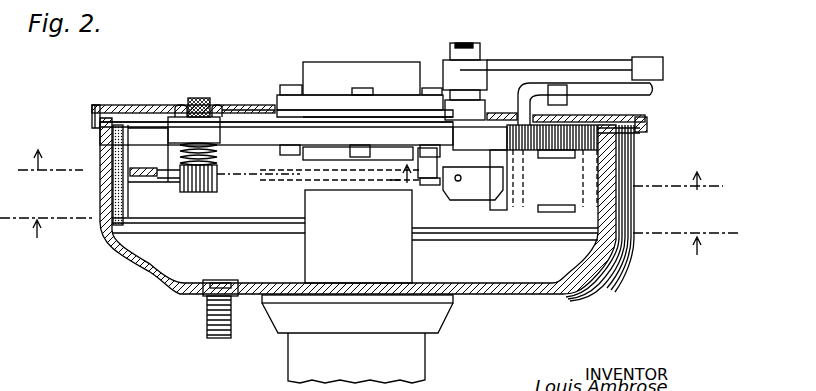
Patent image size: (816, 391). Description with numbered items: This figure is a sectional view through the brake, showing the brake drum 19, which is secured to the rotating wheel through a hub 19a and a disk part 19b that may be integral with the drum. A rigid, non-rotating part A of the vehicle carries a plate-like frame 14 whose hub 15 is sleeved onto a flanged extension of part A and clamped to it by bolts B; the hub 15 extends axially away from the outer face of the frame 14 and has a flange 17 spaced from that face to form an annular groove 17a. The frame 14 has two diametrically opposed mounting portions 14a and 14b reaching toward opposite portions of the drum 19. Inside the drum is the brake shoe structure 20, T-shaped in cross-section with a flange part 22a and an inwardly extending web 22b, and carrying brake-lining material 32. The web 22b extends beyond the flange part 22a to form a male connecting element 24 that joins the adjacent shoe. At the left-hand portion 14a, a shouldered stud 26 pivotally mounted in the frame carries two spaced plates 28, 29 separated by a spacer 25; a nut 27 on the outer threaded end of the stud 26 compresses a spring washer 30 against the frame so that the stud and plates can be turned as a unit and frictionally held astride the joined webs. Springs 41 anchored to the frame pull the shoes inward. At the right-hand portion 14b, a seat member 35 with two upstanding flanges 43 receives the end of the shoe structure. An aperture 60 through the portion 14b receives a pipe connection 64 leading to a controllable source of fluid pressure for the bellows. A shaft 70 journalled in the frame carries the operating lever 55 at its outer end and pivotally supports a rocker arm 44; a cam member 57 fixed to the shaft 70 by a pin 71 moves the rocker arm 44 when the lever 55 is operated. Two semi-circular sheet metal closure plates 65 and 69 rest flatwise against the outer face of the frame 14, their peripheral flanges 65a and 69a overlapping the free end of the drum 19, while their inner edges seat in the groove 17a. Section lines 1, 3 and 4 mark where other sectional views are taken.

The brake drum 19 is at (100, 143).
The hub 19a is at (312, 262).
The disk part 19b is at (186, 292).
The brake shoe structure 20 is at (180, 218).
The plate 65 is at (115, 106).
The peripheral flange 65a is at (648, 137).
The plate 69 is at (102, 106).
The peripheral flange 69a is at (92, 110).
The spring washer 30 is at (222, 130).
The stud 26 is at (200, 97).
The nut 27 is at (180, 105).
The mounting portion 14a is at (232, 112).
The frame 14 is at (244, 106).
The mounting portion 14b is at (644, 130).
The brake-lining material 32 is at (118, 200).
The flange part 22a is at (128, 153).
The male connecting element 24 is at (143, 167).
The plate 28 is at (140, 183).
The plate 29 is at (218, 160).
The spacer 25 is at (198, 182).
The web 22b is at (252, 184).
The non-rotating part A is at (362, 72).
The flange 17 is at (330, 110).
The annular groove 17a is at (312, 116).
The hub 15 is at (390, 114).
The aperture 60 is at (500, 113).
The shaft 70 is at (467, 42).
The operating lever 55 is at (555, 62).
The pipe connection 64 is at (590, 92).
The springs 41 is at (418, 180).
The bolts B is at (290, 155).
The pin 71 is at (440, 182).
The cam member 57 is at (480, 180).
The rocker arm 44 is at (492, 200).
The upstanding flanges 43 is at (553, 158).
The seat member 35 is at (525, 220).
The section line 4- 4 is at (50, 177).
The section line 1- 1 is at (370, 251).
The section line 3- 3 is at (556, 197).